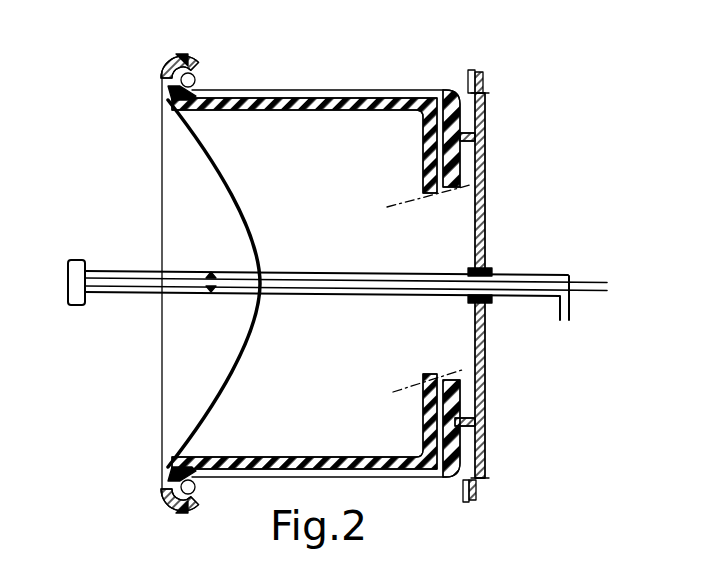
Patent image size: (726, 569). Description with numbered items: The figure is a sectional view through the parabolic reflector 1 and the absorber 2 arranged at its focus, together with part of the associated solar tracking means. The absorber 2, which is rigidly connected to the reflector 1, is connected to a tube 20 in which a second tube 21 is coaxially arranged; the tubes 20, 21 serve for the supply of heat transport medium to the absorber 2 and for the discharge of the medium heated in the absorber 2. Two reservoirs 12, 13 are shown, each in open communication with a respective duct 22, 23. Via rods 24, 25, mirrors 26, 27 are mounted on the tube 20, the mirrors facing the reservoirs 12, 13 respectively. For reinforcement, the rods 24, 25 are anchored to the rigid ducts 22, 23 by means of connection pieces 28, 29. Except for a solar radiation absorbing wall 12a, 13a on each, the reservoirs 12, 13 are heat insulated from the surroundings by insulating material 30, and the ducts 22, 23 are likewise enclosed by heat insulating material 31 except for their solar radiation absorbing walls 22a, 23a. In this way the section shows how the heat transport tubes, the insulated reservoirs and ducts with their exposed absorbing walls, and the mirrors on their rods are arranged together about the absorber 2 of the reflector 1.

The parabolic reflector 1 is at (230, 190).
The absorber 2 is at (77, 260).
The reservoir 12 is at (172, 510).
The solar radiation absorbing wall 12a is at (190, 492).
The reservoir 13 is at (180, 57).
The solar radiation absorbing wall 13a is at (196, 72).
The tube 20 is at (130, 271).
The tube 21 is at (128, 292).
The duct 22 is at (326, 455).
The solar radiation absorbing wall 22a is at (310, 478).
The duct 23 is at (326, 110).
The solar radiation absorbing wall 23a is at (302, 89).
The rod 24 is at (487, 378).
The rod 25 is at (487, 210).
The mirror 26 is at (467, 502).
The mirror 27 is at (471, 68).
The connection piece 28 is at (470, 420).
The connection piece 29 is at (470, 140).
The insulating material 30 is at (160, 76).
The heat insulating material 31 is at (425, 120).